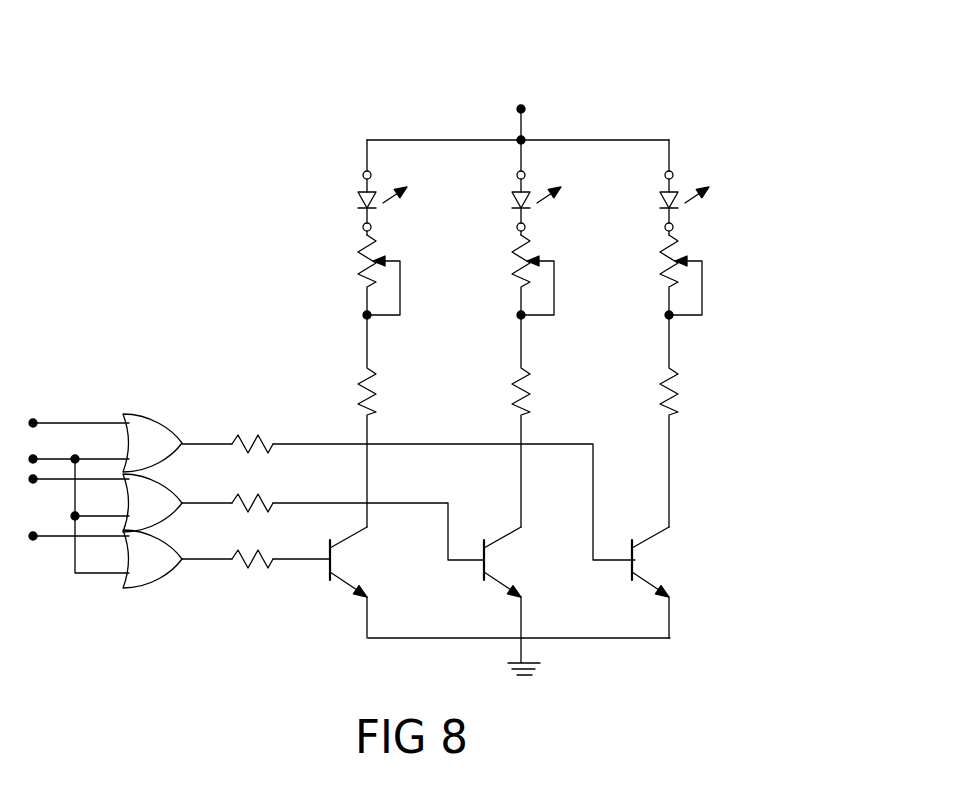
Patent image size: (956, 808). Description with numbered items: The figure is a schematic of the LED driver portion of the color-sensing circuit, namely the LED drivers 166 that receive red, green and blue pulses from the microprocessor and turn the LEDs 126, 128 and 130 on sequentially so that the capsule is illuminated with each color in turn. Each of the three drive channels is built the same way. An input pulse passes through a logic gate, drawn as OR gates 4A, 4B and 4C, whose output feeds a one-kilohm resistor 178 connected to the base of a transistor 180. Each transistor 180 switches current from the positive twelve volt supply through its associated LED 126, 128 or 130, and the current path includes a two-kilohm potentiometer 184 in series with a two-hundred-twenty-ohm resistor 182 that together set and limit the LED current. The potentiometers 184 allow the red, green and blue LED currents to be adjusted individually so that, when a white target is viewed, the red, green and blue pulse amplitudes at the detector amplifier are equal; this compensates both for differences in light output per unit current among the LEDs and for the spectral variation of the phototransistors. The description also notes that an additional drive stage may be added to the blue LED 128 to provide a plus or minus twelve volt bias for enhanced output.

The LED drivers 166 is at (403, 372).
The LED 126 is at (358, 200).
The LED 128 is at (511, 198).
The LED 130 is at (659, 200).
The potentiometer 184 is at (358, 262).
The resistor 182 is at (376, 390).
The transistor 180 is at (342, 558).
The resistor 178 is at (248, 437).
The OR gate 4A is at (170, 577).
The OR gate 4B is at (183, 492).
The OR gate 4C is at (180, 430).